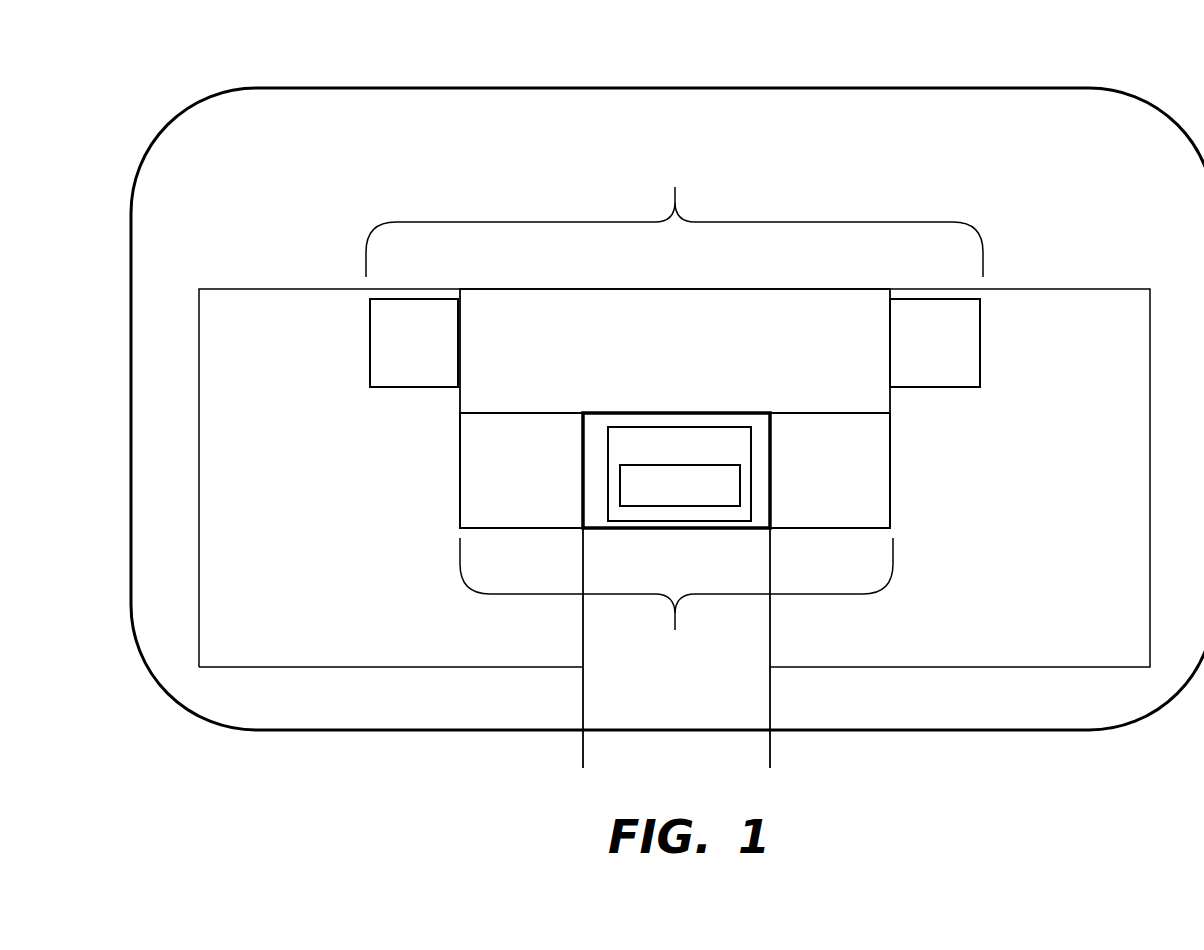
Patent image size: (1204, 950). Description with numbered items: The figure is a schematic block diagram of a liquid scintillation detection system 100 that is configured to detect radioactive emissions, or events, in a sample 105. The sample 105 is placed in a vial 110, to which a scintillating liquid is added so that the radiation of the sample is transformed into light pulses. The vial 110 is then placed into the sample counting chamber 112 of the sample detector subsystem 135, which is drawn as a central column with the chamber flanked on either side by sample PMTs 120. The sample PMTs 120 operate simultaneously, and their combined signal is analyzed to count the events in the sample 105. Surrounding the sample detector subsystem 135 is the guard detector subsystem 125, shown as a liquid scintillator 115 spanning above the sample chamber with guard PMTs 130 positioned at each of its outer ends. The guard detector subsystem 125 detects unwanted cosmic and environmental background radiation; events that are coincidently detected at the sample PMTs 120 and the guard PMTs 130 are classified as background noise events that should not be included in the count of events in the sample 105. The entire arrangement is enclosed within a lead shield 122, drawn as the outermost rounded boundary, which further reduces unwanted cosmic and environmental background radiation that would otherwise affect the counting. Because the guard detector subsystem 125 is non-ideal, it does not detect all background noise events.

The liquid scintillation detection system 100 is at (667, 379).
The lead shield 122 is at (735, 75).
The guard detector subsystem 125 is at (811, 145).
The liquid scintillator 115 is at (799, 277).
The guard PMTs 130 is at (447, 388).
The sample PMTs 120 is at (543, 410).
The sample counting chamber 112 is at (645, 401).
The vial 110 is at (679, 414).
The sample 105 is at (643, 507).
The sample detector subsystem 135 is at (659, 713).